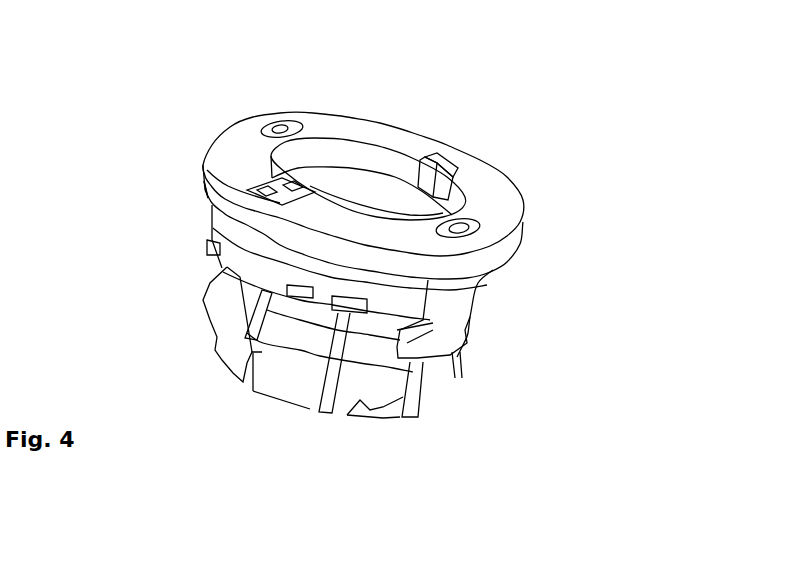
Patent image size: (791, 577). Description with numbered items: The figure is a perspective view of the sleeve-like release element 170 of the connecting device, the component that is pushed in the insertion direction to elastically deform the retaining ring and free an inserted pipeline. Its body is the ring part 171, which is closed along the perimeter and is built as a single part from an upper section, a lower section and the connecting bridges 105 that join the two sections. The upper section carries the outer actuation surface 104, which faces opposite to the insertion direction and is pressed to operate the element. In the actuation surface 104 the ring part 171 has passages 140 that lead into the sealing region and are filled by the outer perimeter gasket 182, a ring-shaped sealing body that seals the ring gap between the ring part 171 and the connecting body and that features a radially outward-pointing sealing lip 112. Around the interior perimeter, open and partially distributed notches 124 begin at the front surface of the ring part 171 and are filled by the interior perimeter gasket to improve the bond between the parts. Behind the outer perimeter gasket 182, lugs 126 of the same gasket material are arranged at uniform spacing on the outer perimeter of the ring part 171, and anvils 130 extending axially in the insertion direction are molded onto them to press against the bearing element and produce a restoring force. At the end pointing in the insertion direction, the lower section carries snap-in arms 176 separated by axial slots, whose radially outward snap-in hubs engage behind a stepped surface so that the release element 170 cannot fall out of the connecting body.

The release element 170 is at (228, 91).
The actuation surface 104 is at (410, 147).
The connecting bridges 105 is at (275, 218).
The ring part 171 is at (350, 137).
The passage 140 is at (282, 122).
The notches 124 is at (275, 183).
The sealing lip 112 is at (204, 181).
The outer perimeter gasket 182 is at (206, 189).
The anvils 130 is at (456, 338).
The snap-in arms 176 is at (227, 352).
The lugs 126 is at (243, 258).